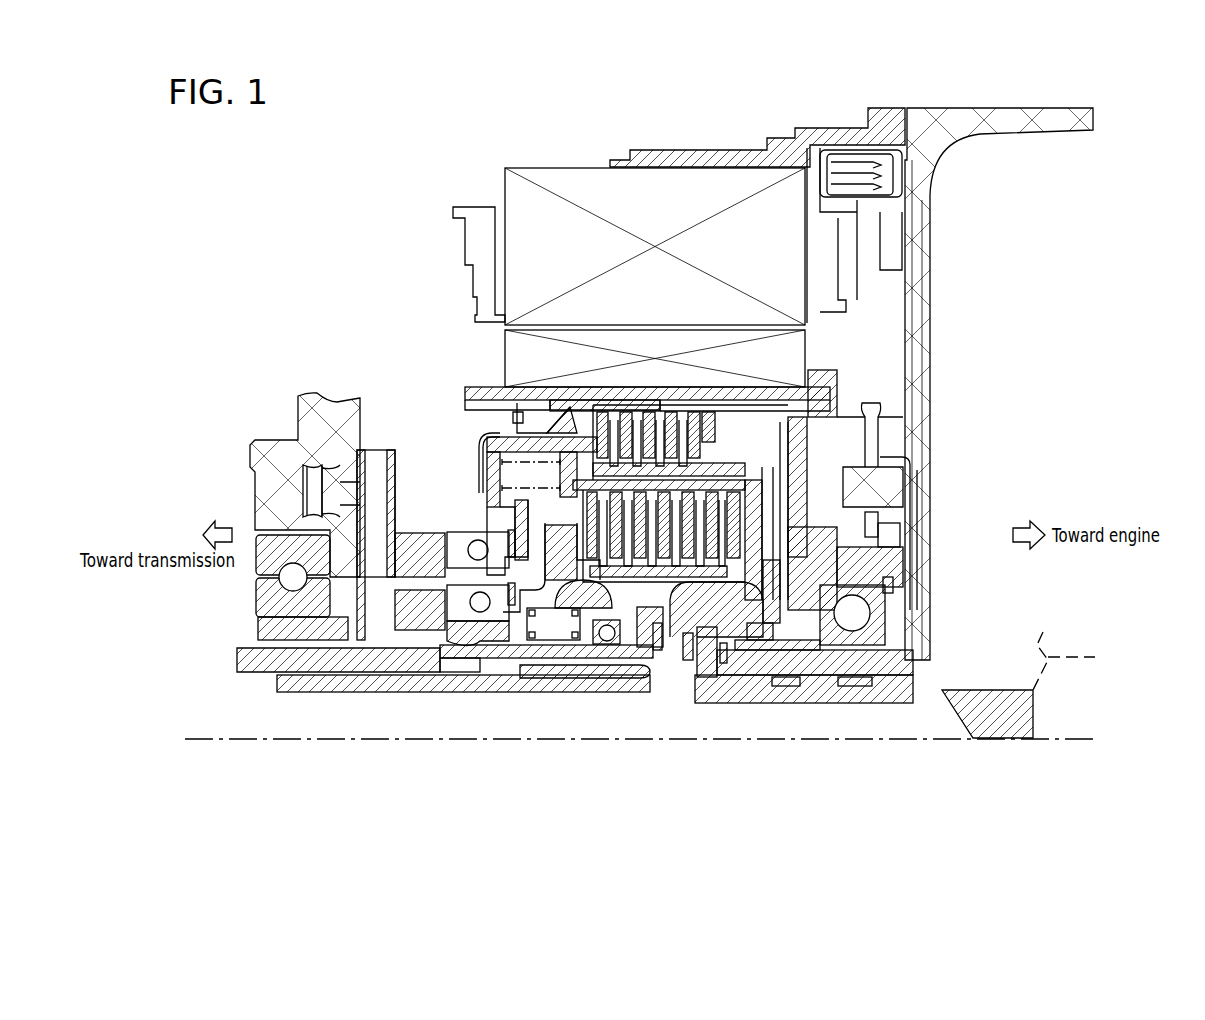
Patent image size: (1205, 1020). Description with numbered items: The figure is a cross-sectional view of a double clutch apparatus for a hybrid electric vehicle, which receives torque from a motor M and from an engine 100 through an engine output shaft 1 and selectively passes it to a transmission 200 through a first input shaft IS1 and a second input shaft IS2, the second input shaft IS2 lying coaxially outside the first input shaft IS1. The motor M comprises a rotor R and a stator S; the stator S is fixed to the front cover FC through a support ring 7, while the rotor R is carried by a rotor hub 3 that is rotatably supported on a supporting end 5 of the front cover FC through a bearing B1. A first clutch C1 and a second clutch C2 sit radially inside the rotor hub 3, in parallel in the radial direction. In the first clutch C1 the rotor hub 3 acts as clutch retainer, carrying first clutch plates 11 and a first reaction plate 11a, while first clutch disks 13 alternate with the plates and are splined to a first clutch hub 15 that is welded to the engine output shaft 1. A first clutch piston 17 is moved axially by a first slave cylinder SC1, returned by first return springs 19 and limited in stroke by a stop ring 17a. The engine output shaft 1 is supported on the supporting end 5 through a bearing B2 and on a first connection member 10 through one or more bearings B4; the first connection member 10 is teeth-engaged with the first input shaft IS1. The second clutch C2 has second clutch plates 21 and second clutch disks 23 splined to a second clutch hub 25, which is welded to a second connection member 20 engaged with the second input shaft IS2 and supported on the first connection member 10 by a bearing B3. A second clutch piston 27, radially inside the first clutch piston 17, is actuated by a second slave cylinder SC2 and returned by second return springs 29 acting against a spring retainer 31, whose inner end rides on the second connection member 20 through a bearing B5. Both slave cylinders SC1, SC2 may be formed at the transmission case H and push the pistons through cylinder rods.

The engine output shaft 1 is at (885, 704).
The rotor hub 3 is at (540, 386).
The supporting end 5 is at (762, 670).
The support ring 7 is at (691, 160).
The first connection member 10 is at (643, 679).
The first clutch plates 11 is at (672, 428).
The first reaction plate 11a is at (700, 452).
The first clutch disks 13 is at (688, 440).
The first clutch hub 15 is at (882, 458).
The first clutch piston 17 is at (490, 486).
The stop ring 17a is at (482, 450).
The first return springs 19 is at (502, 462).
The second connection member 20 is at (587, 658).
The second clutch plates 21 is at (740, 497).
The second clutch disks 23 is at (707, 513).
The second clutch hub 25 is at (693, 553).
The second clutch piston 27 is at (495, 643).
The second return springs 29 is at (535, 642).
The spring retainer 31 is at (560, 614).
The engine 100 is at (1040, 642).
The transmission 200 is at (283, 364).
The bearing B1 is at (900, 626).
The bearing B2 is at (838, 688).
The bearing B3 is at (658, 652).
The bearings B4 is at (688, 662).
The bearing B5 is at (610, 645).
The first clutch C1 is at (607, 403).
The second clutch C2 is at (702, 592).
The front cover FC is at (930, 306).
The transmission case H is at (262, 440).
The first input shaft IS1 is at (345, 686).
The second input shaft IS2 is at (392, 664).
The motor M is at (650, 267).
The stator S is at (540, 258).
The rotor R is at (540, 340).
The first slave cylinder SC1 is at (409, 531).
The second slave cylinder SC2 is at (426, 634).